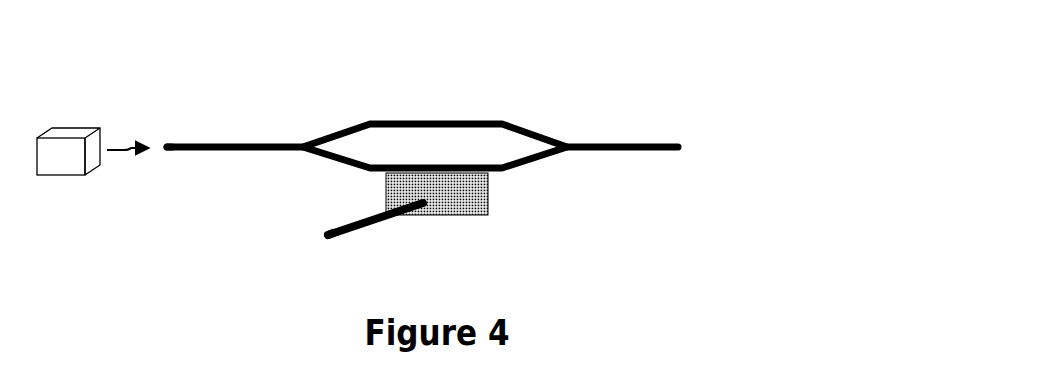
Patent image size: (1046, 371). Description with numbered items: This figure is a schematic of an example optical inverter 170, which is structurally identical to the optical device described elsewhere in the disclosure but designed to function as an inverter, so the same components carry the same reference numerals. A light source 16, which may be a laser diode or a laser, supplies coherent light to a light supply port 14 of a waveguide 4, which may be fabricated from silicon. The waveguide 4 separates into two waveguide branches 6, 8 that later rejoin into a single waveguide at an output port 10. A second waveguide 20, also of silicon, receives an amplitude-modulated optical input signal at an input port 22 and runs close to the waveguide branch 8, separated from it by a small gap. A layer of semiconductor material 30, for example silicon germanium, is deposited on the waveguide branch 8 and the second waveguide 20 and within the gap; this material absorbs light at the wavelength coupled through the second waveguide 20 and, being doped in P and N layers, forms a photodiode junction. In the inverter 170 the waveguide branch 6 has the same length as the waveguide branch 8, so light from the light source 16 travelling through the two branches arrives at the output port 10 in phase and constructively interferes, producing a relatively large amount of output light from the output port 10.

The optical inverter 170 is at (687, 57).
The light source 16 is at (48, 169).
The light supply port 14 is at (169, 151).
The waveguide 4 is at (220, 143).
The waveguide branch 6 is at (445, 120).
The waveguide branch 8 is at (530, 165).
The output port 10 is at (612, 142).
The semiconductor material 30 is at (468, 193).
The second waveguide 20 is at (362, 232).
The input port 22 is at (327, 238).